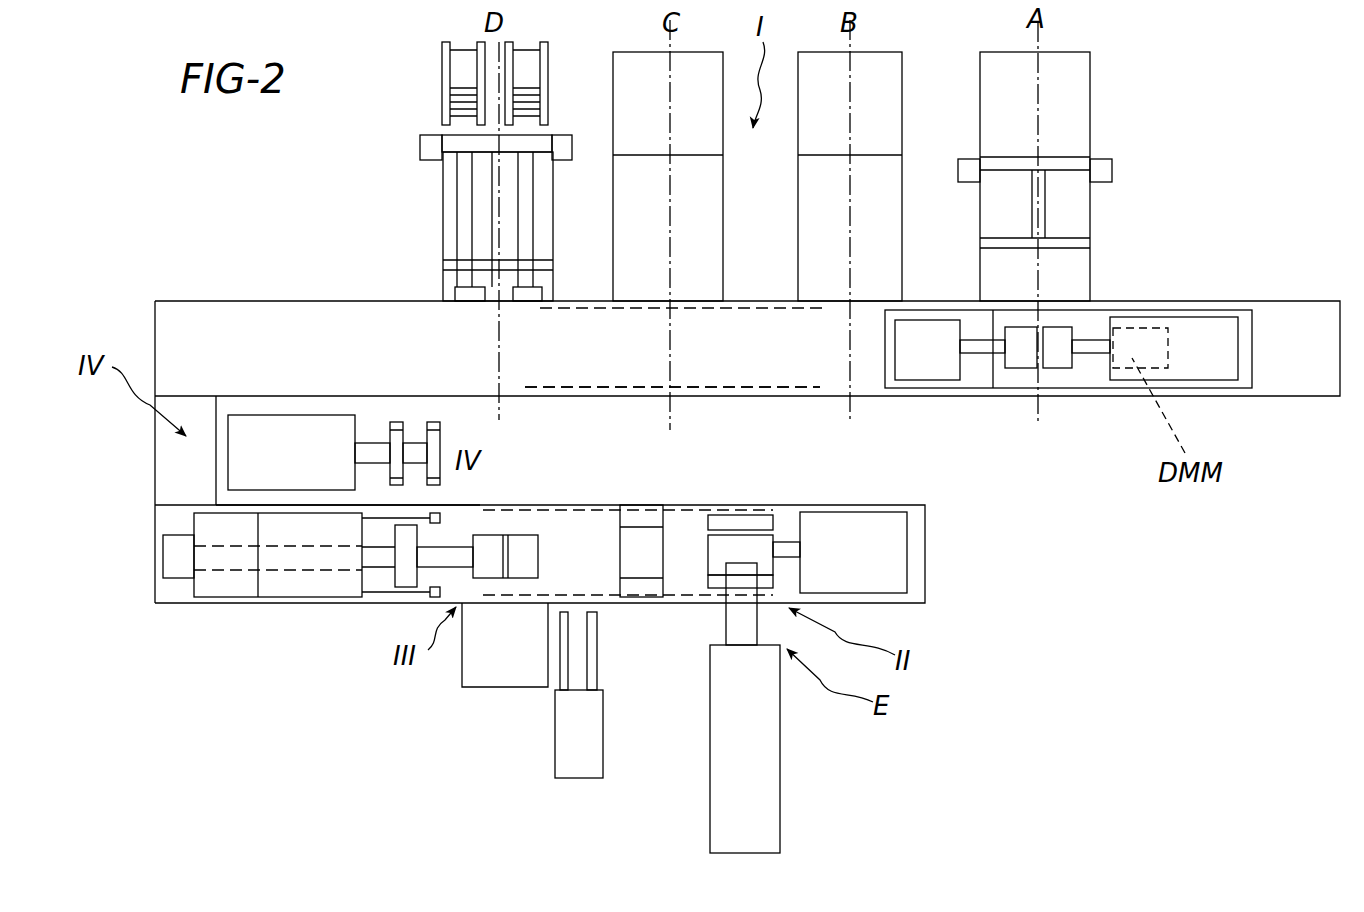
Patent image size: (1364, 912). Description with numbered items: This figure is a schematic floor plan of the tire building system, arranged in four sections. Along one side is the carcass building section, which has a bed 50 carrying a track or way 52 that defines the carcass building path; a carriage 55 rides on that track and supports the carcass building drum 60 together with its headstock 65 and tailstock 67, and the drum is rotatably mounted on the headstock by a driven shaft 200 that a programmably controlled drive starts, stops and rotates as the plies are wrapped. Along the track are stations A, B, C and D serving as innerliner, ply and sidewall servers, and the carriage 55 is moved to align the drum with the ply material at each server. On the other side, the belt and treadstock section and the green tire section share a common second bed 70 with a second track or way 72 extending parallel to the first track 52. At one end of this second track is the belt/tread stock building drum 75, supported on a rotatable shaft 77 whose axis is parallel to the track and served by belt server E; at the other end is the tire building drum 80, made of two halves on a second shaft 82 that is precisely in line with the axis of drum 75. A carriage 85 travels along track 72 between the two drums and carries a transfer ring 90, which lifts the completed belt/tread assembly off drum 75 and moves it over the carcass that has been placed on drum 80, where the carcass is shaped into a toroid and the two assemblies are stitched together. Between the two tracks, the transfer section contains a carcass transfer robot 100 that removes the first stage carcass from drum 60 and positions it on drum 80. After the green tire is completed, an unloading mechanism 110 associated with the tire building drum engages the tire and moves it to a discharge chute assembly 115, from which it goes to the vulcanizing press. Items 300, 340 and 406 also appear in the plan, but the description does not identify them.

The bed 50 is at (369, 299).
The track or way 52 is at (745, 388).
The carriage 55 is at (1085, 372).
The carcass building drum 60 is at (1021, 370).
The headstock 65 is at (1203, 333).
The tailstock 67 is at (925, 372).
The second bed 70 is at (682, 505).
The second track or way 72 is at (560, 510).
The belt/tread stock building drum 75 is at (758, 542).
The rotatable shaft 77 is at (790, 552).
The tire building drum 80 is at (471, 528).
The second shaft 82 is at (385, 565).
The carriage 85 is at (645, 512).
The transfer ring 90 is at (633, 557).
The carcass transfer robot 100 is at (379, 425).
The unloading mechanism 110 is at (390, 600).
The discharge chute assembly 115 is at (558, 680).
The rotatably driven shaft 200 is at (1090, 342).
The partition wall 300 is at (253, 498).
The hydraulic cylinder 340 is at (300, 583).
The drive unit 406 is at (897, 565).